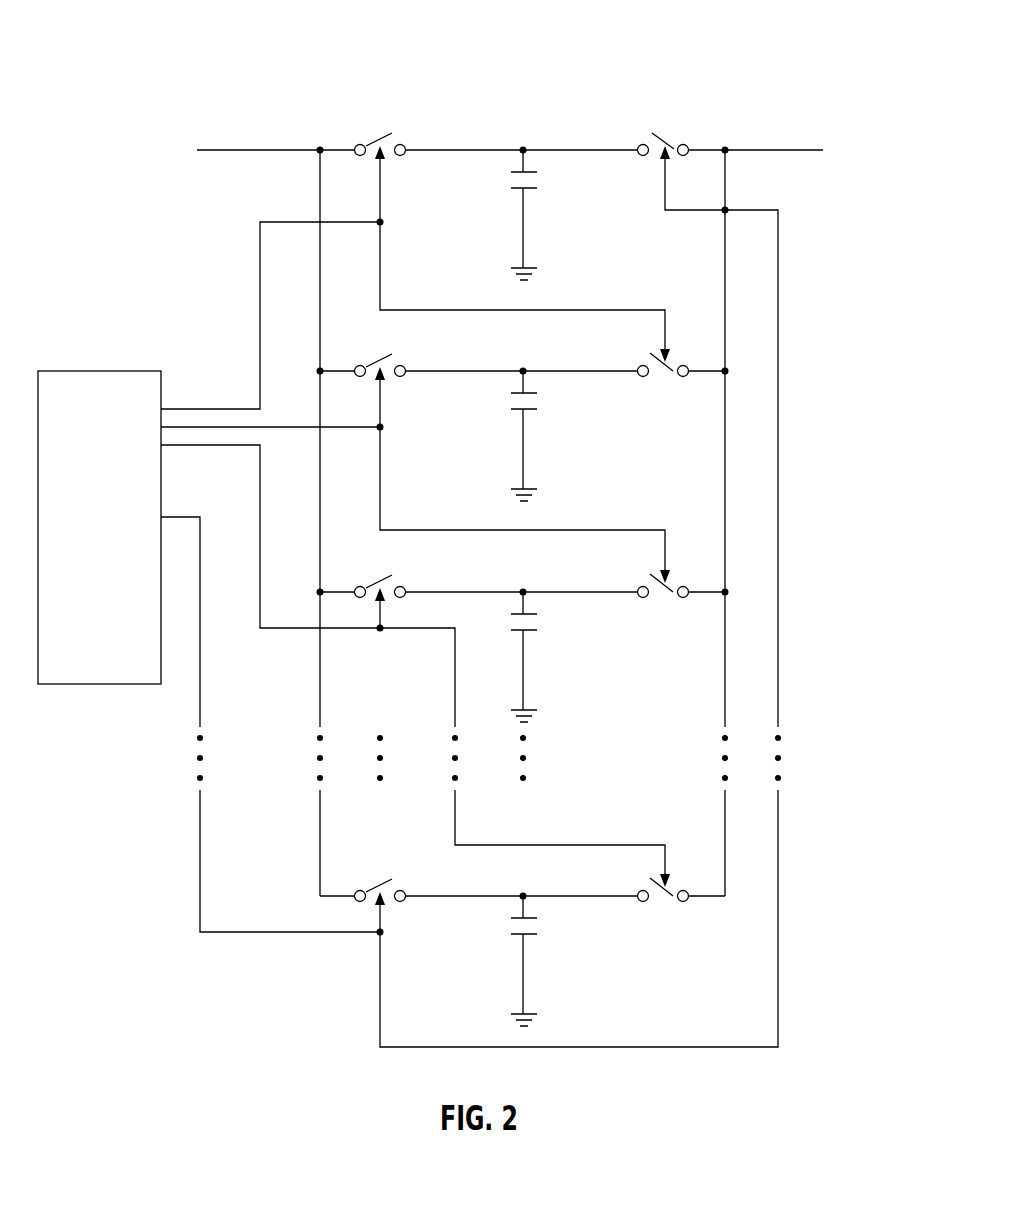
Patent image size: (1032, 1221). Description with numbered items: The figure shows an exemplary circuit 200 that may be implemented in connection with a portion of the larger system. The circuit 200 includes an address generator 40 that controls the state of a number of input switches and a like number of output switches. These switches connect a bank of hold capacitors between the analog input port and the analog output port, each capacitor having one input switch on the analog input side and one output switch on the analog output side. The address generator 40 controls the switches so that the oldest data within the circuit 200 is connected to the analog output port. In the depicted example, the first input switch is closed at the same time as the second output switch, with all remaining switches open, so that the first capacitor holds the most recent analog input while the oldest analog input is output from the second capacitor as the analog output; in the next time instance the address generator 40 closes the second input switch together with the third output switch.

The circuit 200 is at (113, 26).
The address generator 40 is at (91, 370).